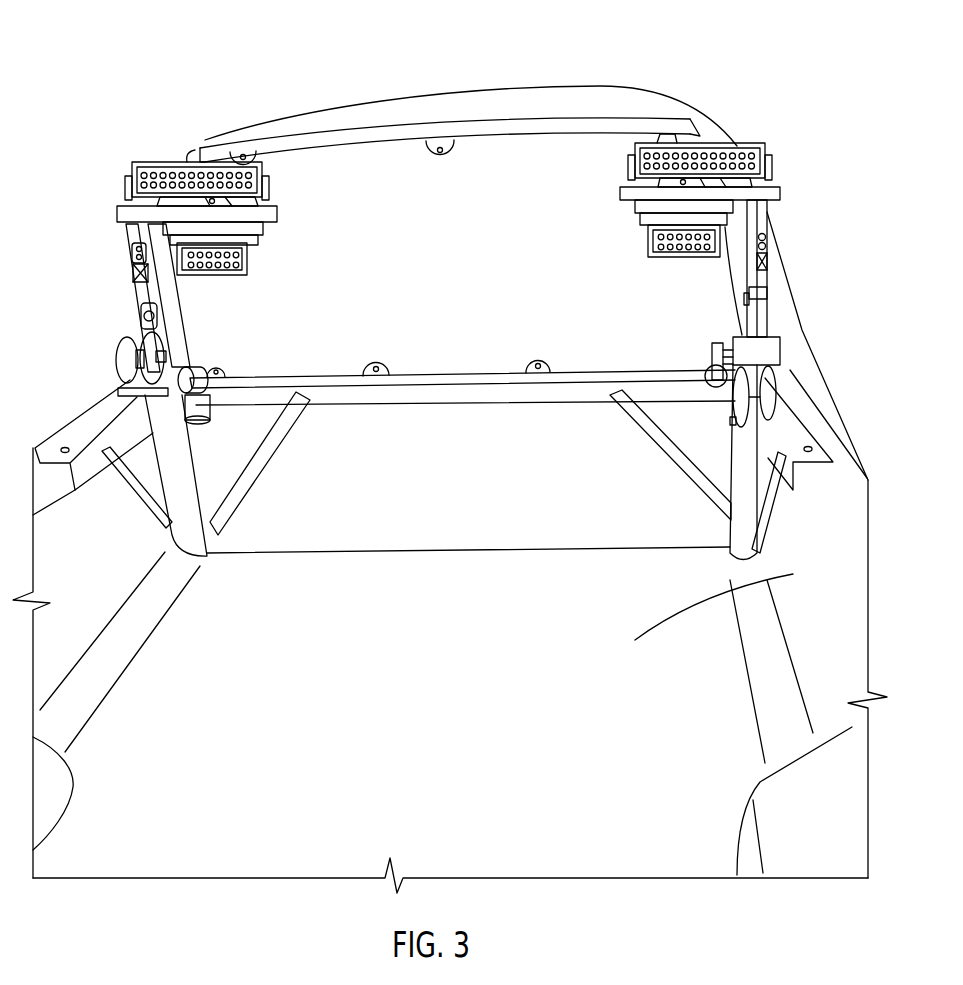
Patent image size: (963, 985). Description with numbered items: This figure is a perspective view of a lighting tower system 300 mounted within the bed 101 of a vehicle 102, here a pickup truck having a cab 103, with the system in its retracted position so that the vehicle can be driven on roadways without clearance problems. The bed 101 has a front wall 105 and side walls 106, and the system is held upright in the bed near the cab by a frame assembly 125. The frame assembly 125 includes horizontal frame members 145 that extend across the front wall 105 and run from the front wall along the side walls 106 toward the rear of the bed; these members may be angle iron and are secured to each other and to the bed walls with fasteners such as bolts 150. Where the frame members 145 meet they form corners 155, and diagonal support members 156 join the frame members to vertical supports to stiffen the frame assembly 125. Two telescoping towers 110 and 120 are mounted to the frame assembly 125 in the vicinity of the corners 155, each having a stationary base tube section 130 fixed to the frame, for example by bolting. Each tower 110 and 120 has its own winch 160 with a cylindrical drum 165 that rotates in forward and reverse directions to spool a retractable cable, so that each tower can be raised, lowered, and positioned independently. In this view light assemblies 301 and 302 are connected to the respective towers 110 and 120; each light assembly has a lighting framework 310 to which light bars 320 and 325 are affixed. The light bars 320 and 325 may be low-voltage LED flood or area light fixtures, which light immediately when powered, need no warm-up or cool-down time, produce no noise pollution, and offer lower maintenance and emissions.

The bed 101 is at (795, 574).
The vehicle 102 is at (672, 76).
The cab 103 is at (470, 104).
The front wall 105 is at (484, 492).
The side walls 106 is at (90, 594).
The tower 110 is at (112, 270).
The tower 120 is at (803, 208).
The frame assembly 125 is at (355, 410).
The base tube section 130 is at (208, 537).
The horizontal frame members 145 is at (407, 390).
The bolts 150 is at (65, 448).
The corners 155 is at (130, 392).
The diagonal support members 156 is at (140, 490).
The winch 160 is at (200, 376).
The cylindrical drum 165 is at (158, 342).
The lighting tower system 300 is at (803, 149).
The light assembly 301 is at (115, 181).
The light assembly 302 is at (753, 135).
The lighting framework 310 is at (278, 213).
The light bar 320 is at (157, 162).
The light bar 325 is at (248, 266).